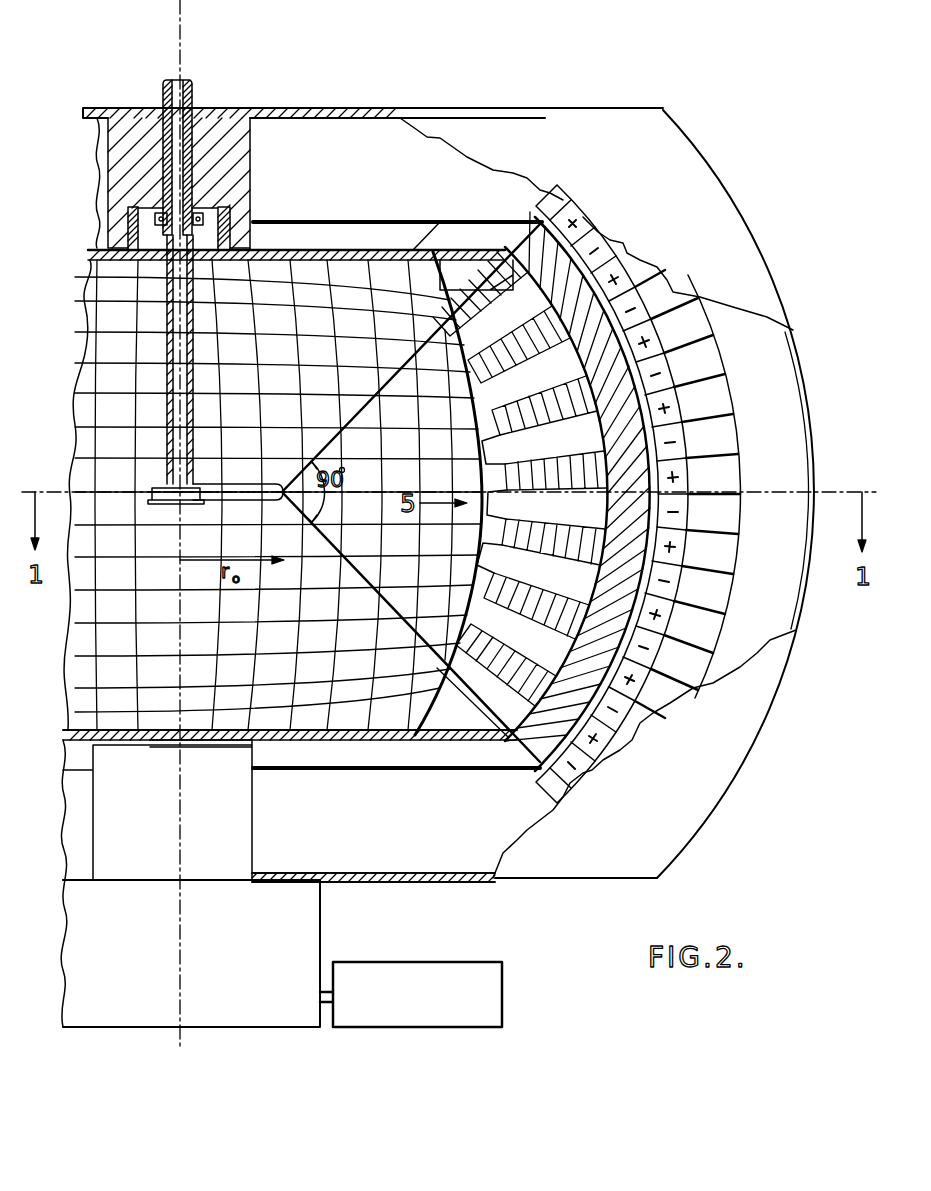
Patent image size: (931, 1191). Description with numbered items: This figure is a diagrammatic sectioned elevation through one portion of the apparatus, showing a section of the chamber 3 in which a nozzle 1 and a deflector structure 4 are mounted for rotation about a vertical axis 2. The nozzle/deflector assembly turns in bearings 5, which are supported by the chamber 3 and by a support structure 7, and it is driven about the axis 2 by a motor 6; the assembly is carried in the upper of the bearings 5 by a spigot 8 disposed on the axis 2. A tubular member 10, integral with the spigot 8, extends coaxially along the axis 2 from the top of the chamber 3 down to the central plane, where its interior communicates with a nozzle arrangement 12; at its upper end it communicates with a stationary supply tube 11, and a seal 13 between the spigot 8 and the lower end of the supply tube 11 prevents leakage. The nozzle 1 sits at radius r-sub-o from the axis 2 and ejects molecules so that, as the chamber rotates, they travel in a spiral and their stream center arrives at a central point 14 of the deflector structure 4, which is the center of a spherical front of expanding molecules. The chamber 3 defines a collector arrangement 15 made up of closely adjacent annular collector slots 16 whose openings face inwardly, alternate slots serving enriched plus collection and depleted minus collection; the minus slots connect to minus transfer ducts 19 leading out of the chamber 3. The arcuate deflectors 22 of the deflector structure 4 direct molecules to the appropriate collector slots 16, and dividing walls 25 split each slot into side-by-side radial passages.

The nozzle 1 is at (283, 480).
The vertical axis of rotation 2 is at (183, 37).
The chamber 3 is at (722, 160).
The deflector structure 4 is at (467, 700).
The bearings 5 is at (254, 211).
The motor 6 is at (421, 1012).
The support structure 7 is at (251, 977).
The spigot 8 is at (228, 242).
The tubular member 10 is at (175, 375).
The supply tube 11 is at (193, 97).
The nozzle arrangement 12 is at (172, 504).
The seal 13 is at (204, 218).
The central point of the deflector structure 14 is at (612, 462).
The collector arrangement 15 is at (300, 290).
The annular collector slots 16 is at (673, 293).
The '−' transfer ducts 19 is at (778, 377).
The arcuate deflectors 22 is at (486, 290).
The dividing walls 25 is at (323, 732).